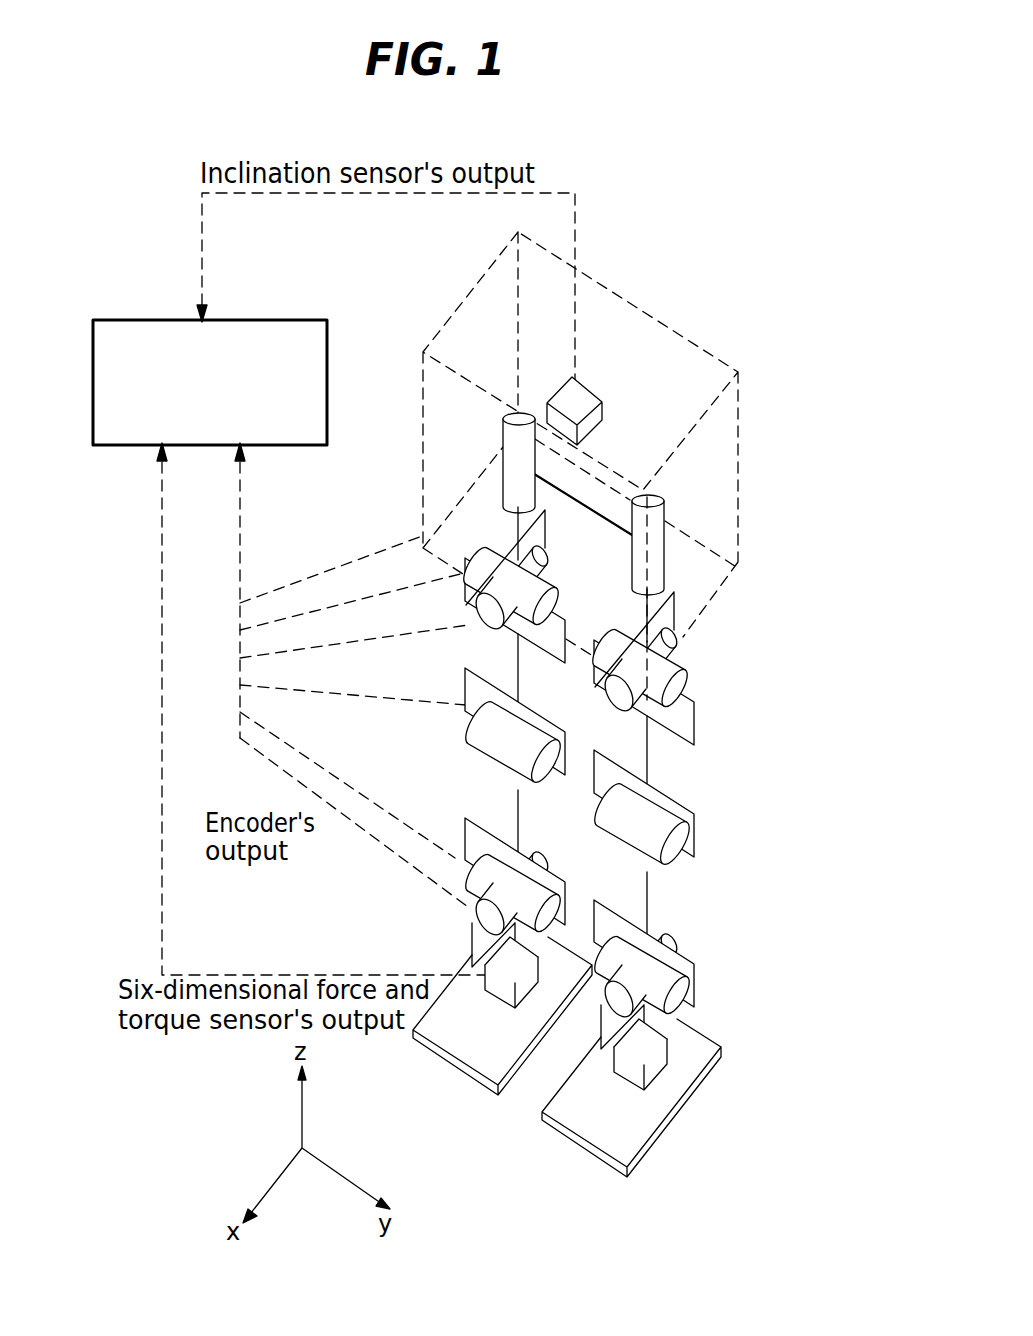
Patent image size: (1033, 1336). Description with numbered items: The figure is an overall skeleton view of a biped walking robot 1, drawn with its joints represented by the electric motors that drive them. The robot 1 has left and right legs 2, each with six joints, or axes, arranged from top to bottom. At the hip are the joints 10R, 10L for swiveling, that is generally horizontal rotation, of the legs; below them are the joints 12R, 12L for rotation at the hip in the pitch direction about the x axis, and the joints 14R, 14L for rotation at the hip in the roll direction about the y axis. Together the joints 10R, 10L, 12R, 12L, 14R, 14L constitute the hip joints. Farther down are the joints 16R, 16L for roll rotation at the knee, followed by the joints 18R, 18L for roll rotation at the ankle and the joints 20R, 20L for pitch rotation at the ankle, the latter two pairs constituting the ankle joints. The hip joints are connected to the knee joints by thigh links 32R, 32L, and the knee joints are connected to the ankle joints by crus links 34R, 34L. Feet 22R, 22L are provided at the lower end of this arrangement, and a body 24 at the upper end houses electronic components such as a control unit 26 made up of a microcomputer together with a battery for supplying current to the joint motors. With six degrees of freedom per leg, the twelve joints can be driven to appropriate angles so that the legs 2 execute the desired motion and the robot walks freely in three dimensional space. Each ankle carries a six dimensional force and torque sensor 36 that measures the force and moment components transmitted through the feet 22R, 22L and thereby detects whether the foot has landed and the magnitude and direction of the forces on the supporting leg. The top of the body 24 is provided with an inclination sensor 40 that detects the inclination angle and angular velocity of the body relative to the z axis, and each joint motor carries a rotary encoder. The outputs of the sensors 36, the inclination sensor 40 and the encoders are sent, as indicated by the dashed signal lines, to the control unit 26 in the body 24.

The biped walking robot 1 is at (702, 652).
The legs 2 is at (714, 803).
The hip swivel joint (right) 10R is at (535, 488).
The hip swivel joint (left) 10L is at (681, 568).
The hip pitch joint (right) 12R is at (548, 556).
The hip pitch joint (left) 12L is at (711, 628).
The hip roll joint (right) 14R is at (558, 603).
The hip roll joint (left) 14L is at (683, 654).
The knee roll joint (right) 16R is at (550, 776).
The knee roll joint (left) 16L is at (674, 834).
The ankle roll joint (right) 18R is at (553, 945).
The ankle roll joint (left) 18L is at (683, 974).
The ankle pitch joint (right) 20R is at (545, 856).
The ankle pitch joint (left) 20L is at (705, 941).
The foot (right) 22R is at (482, 1058).
The foot (left) 22L is at (643, 1104).
The body 24 is at (630, 300).
The control unit 26 is at (288, 320).
The thigh link (right) 32R is at (520, 684).
The thigh link (left) 32L is at (675, 712).
The crus link (right) 34R is at (516, 794).
The crus link (left) 34L is at (614, 901).
The six dimensional force and torque sensor 36 is at (505, 995).
The inclination sensor 40 is at (603, 397).